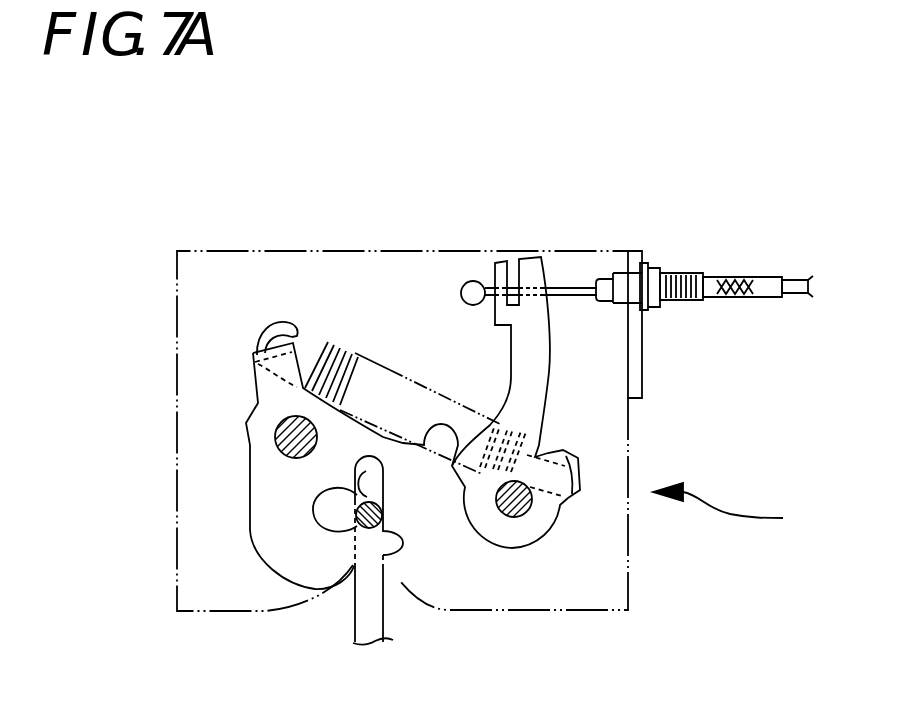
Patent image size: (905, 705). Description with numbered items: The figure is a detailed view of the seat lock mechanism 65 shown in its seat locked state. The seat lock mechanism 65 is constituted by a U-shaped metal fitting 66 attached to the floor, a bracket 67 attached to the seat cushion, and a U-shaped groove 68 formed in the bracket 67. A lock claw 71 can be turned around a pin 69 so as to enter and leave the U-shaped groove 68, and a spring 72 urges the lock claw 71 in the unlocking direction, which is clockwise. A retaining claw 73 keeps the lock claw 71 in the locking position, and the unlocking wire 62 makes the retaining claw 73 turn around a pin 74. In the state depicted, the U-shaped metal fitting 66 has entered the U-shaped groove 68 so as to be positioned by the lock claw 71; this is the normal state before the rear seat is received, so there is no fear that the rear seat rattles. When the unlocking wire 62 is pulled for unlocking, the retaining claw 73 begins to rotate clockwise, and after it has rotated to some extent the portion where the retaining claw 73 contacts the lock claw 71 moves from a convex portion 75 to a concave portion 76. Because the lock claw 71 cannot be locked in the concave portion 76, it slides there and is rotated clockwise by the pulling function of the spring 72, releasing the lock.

The unlocking wire 62 is at (572, 283).
The seat lock mechanism 65 is at (733, 508).
The U-shaped metal fitting 66 is at (398, 517).
The bracket 67 is at (177, 303).
The U-shaped groove 68 is at (452, 466).
The pin 69 is at (277, 433).
The lock claw 71 is at (250, 520).
The spring 72 is at (352, 347).
The retaining claw 73 is at (550, 373).
The pin 74 is at (522, 513).
The convex portion 75 is at (430, 426).
The concave portion 76 is at (470, 540).